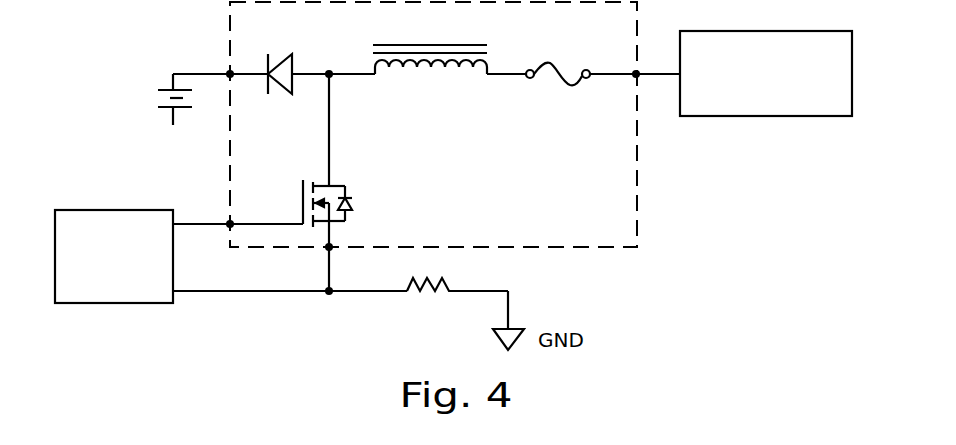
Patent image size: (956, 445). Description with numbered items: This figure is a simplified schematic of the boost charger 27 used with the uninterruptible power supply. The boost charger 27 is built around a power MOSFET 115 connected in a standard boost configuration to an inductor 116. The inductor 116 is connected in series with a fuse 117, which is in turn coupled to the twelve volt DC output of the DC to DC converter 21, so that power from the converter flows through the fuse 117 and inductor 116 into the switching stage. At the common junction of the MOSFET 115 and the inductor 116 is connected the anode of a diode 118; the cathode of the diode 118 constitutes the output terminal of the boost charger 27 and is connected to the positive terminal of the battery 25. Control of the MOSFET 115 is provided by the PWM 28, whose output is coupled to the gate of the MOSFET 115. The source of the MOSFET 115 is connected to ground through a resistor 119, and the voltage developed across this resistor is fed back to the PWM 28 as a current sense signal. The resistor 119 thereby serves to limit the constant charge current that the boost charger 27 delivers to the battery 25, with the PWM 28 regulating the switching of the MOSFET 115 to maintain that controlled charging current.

The DC to DC converter 21 is at (747, 117).
The battery 25 is at (168, 110).
The boost charger 27 is at (640, 207).
The PWM 28 is at (106, 208).
The power MOSFET 115 is at (352, 203).
The inductor 116 is at (448, 61).
The fuse 117 is at (553, 62).
The diode 118 is at (292, 62).
The resistor 119 is at (430, 295).